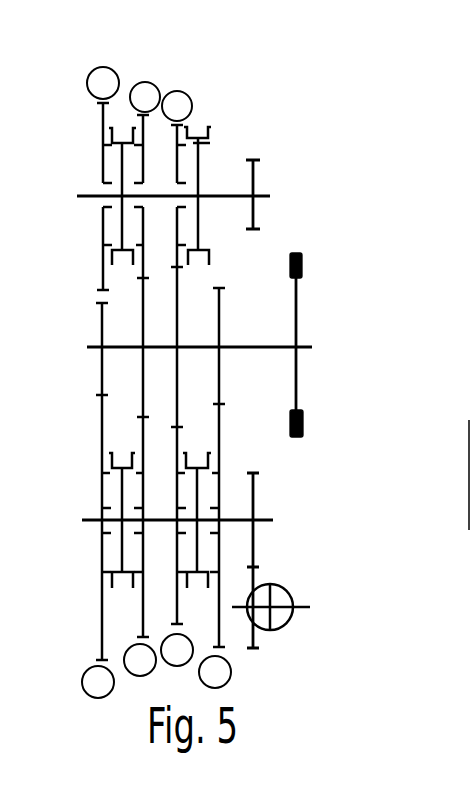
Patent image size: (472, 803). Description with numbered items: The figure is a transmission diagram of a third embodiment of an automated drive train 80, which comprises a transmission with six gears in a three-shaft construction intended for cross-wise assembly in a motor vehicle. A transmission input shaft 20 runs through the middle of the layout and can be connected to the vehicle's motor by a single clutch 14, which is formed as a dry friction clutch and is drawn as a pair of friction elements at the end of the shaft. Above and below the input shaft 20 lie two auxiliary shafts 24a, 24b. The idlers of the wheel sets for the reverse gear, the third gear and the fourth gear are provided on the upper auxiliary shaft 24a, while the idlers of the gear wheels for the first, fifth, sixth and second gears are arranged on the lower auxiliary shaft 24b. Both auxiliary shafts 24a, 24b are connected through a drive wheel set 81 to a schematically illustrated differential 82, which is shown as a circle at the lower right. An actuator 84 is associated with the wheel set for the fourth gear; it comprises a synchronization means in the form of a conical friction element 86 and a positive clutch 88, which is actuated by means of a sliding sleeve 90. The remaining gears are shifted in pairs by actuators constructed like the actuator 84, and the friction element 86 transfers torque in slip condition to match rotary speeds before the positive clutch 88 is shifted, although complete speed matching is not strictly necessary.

The drive train 80 is at (359, 105).
The actuator 84 is at (210, 113).
The sliding sleeve 90 is at (211, 127).
The positive clutch 88 is at (206, 145).
The conical friction element 86 is at (203, 168).
The drive wheel set 81 is at (256, 212).
The differential 82 is at (290, 624).
The single clutch 14 is at (298, 307).
The transmission input shaft 20 is at (90, 346).
The auxiliary shaft 24a is at (88, 194).
The auxiliary shaft 24b is at (85, 519).